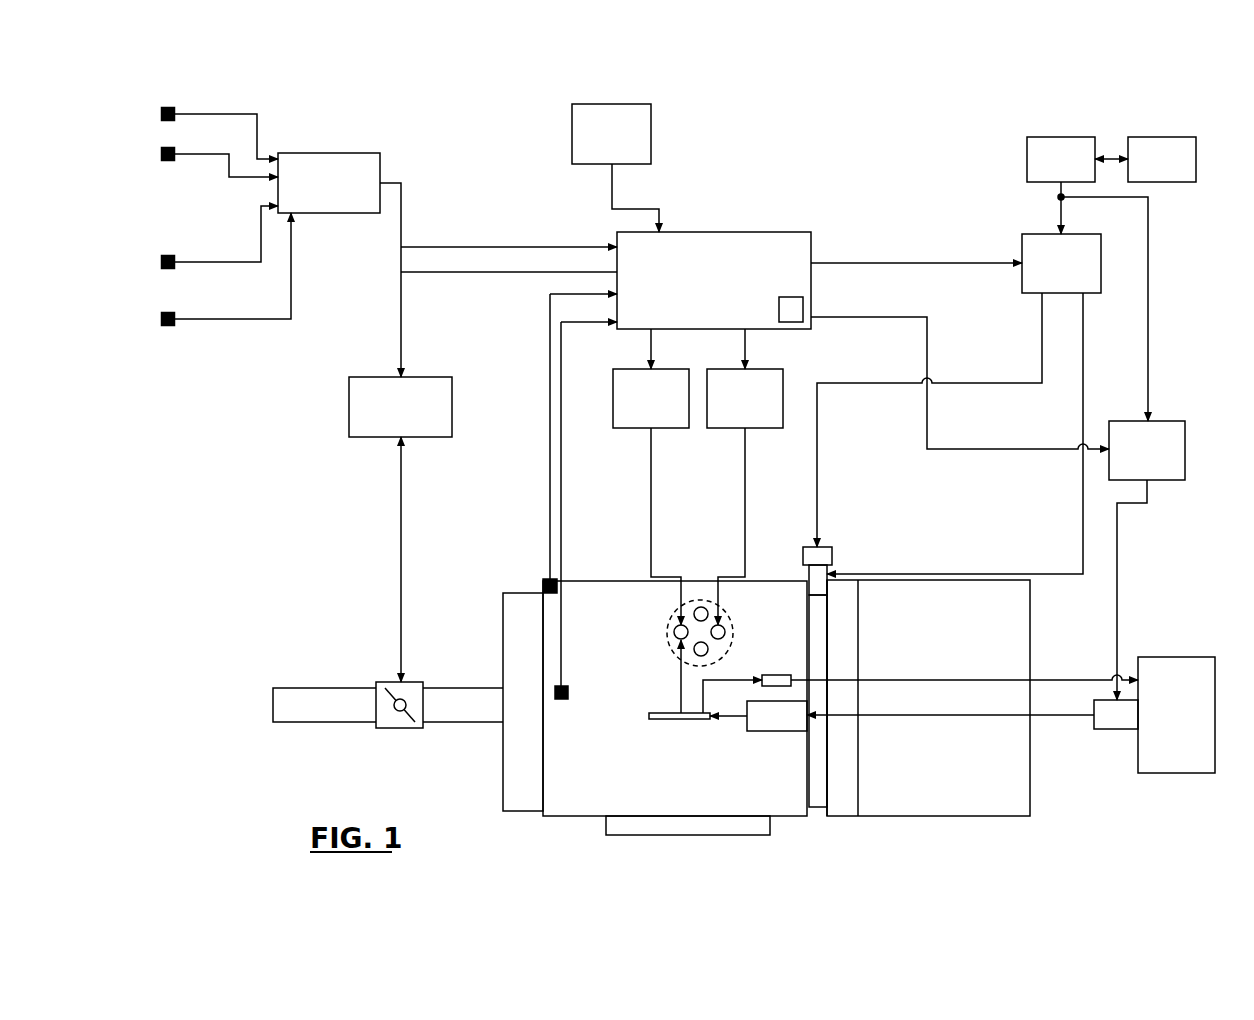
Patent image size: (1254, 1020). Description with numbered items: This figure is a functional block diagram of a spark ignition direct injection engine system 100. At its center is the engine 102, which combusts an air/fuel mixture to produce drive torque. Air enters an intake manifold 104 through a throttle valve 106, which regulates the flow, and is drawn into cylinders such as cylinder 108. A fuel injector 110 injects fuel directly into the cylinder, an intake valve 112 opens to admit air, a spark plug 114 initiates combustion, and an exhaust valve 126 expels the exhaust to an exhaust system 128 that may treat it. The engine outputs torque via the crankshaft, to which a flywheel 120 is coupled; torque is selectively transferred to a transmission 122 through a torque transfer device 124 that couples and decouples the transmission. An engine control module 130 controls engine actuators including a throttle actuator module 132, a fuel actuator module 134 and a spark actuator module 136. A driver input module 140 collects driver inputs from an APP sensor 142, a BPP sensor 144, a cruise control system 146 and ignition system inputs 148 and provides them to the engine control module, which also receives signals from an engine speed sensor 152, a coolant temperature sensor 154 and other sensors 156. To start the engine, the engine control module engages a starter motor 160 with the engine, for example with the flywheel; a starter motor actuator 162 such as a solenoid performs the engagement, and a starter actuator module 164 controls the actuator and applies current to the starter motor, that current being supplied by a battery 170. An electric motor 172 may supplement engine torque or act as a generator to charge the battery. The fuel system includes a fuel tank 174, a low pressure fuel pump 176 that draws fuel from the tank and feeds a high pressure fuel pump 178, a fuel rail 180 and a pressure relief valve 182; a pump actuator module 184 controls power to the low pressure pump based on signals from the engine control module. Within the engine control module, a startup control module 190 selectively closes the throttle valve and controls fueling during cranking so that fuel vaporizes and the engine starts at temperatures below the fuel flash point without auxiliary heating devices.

The engine system 100 is at (165, 74).
The engine 102 is at (590, 816).
The intake manifold 104 is at (503, 600).
The throttle valve 106 is at (380, 682).
The cylinder 108 is at (667, 650).
The fuel injector 110 is at (674, 630).
The intake valve 112 is at (701, 607).
The spark plug 114 is at (725, 632).
The flywheel 120 is at (818, 807).
The transmission 122 is at (942, 816).
The torque transfer device 124 is at (840, 816).
The exhaust valve 126 is at (708, 647).
The exhaust system 128 is at (688, 835).
The engine control module 130 is at (790, 232).
The throttle actuator module 132 is at (380, 377).
The fuel actuator module 134 is at (672, 369).
The spark actuator module 136 is at (772, 369).
The driver input module 140 is at (350, 213).
The APP sensor 142 is at (162, 108).
The BPP sensor 144 is at (162, 148).
The cruise control system 146 is at (162, 256).
The ignition system inputs 148 is at (162, 313).
The engine speed sensor 152 is at (567, 697).
The coolant temperature sensor 154 is at (548, 579).
The other sensors 156 is at (612, 104).
The starter motor 160 is at (806, 576).
The starter motor actuator 162 is at (835, 547).
The starter actuator module 164 is at (1095, 234).
The battery 170 is at (1048, 137).
The electric motor 172 is at (1146, 137).
The fuel tank 174 is at (1178, 657).
The low pressure fuel pump 176 is at (1112, 729).
The high pressure fuel pump 178 is at (775, 731).
The fuel rail 180 is at (678, 719).
The pressure relief valve 182 is at (791, 677).
The pump actuator module 184 is at (1170, 421).
The startup control module 190 is at (803, 308).